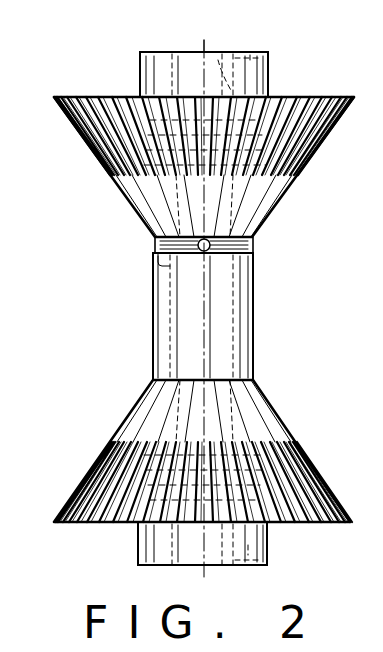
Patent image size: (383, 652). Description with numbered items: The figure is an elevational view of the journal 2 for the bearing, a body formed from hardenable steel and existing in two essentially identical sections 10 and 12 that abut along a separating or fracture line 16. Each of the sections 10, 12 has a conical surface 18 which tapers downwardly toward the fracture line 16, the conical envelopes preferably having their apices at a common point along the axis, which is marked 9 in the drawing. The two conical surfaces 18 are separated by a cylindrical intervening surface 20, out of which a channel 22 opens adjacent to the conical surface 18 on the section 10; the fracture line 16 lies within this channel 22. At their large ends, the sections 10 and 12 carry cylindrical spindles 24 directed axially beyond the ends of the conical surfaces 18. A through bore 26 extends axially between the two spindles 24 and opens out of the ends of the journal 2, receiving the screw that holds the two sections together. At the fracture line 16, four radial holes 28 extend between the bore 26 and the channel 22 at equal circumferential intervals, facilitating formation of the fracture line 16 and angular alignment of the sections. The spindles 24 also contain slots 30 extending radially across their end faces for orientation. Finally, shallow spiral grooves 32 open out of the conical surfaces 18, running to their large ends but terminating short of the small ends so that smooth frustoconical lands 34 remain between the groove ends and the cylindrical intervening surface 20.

The journal 2 is at (134, 297).
The axis 9 is at (271, 26).
The section 10 is at (308, 97).
The section 12 is at (305, 522).
The fracture line 16 is at (168, 262).
The conical surface 18 is at (262, 198).
The cylindrical intervening surface 20 is at (160, 320).
The channel 22 is at (255, 247).
The cylindrical spindle 24 is at (148, 70).
The through bore 26 is at (221, 55).
The radial hole 28 is at (208, 252).
The slot 30 is at (250, 55).
The spiral groove 32 is at (110, 138).
The frustoconical land 34 is at (140, 200).